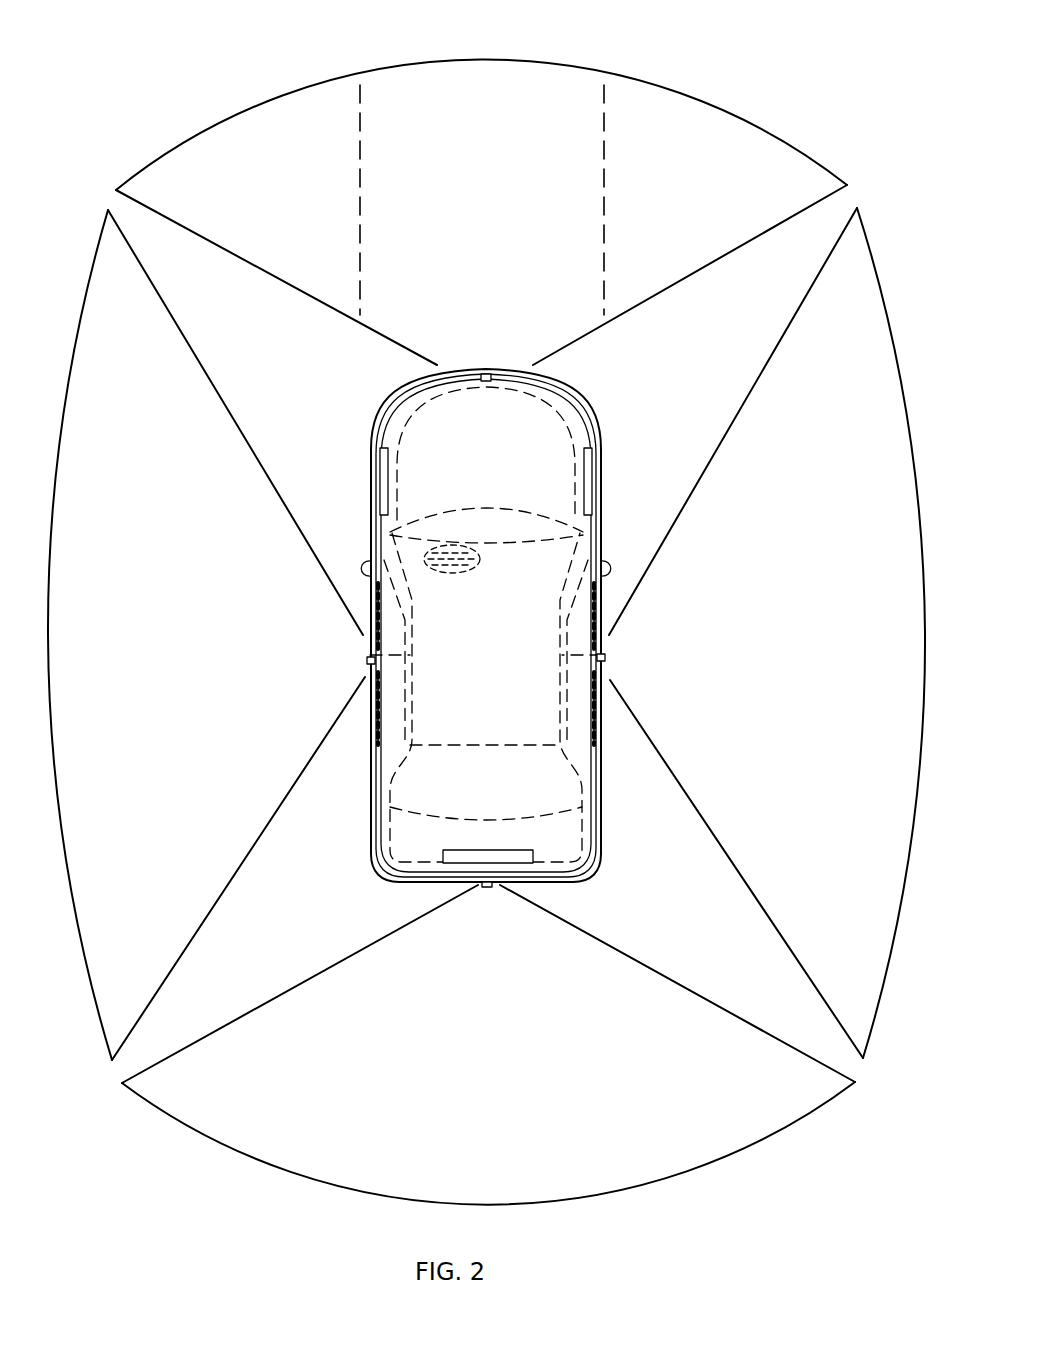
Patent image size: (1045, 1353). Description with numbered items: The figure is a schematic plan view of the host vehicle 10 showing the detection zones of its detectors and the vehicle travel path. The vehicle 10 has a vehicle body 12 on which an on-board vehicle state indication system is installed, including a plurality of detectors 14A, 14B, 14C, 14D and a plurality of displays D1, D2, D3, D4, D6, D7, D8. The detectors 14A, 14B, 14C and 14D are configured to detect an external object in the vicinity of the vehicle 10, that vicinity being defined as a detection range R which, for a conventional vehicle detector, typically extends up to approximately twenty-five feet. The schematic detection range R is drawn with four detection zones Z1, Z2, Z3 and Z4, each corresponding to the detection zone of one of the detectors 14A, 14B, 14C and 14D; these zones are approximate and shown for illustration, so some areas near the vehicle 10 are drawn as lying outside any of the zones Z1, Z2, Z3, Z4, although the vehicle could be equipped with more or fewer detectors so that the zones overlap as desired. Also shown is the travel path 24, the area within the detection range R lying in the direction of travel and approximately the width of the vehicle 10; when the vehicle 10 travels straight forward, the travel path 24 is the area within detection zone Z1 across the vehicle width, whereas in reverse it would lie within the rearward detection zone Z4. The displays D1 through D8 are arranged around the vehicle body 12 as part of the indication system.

The host vehicle 10 is at (492, 631).
The vehicle body 12 is at (612, 428).
The detector 14A is at (484, 374).
The detector 14B is at (367, 663).
The detector 14C is at (605, 656).
The detector 14D is at (489, 889).
The travel path 24 is at (358, 163).
The detection range R is at (752, 55).
The detection zone Z1 is at (528, 60).
The detection zone Z2 is at (88, 283).
The detection zone Z3 is at (882, 287).
The detection zone Z4 is at (753, 1147).
The display D1 is at (448, 850).
The display D2 is at (372, 728).
The display D3 is at (372, 598).
The display D4 is at (380, 460).
The display D6 is at (592, 498).
The display D7 is at (600, 596).
The display D8 is at (597, 726).